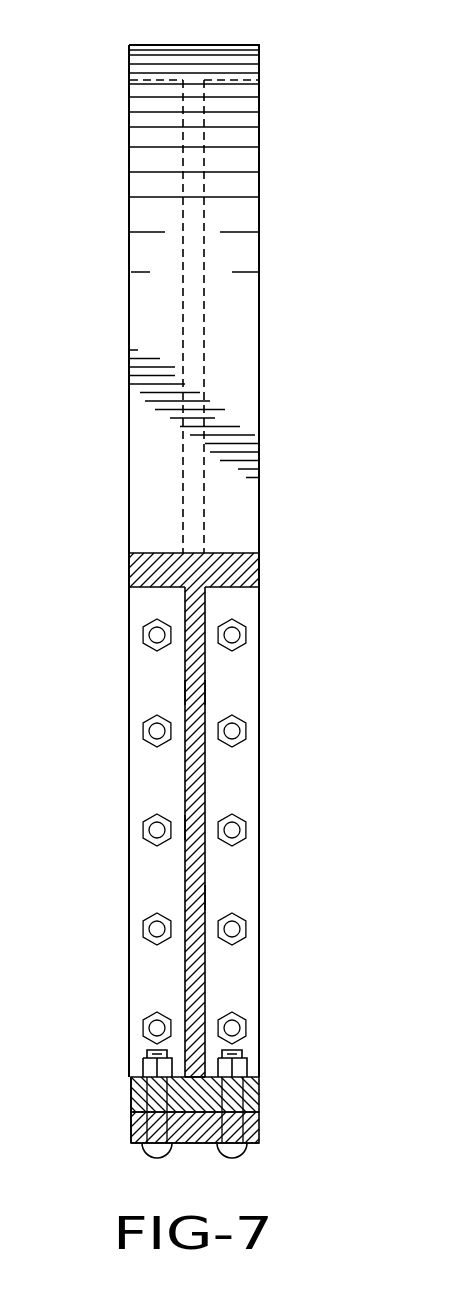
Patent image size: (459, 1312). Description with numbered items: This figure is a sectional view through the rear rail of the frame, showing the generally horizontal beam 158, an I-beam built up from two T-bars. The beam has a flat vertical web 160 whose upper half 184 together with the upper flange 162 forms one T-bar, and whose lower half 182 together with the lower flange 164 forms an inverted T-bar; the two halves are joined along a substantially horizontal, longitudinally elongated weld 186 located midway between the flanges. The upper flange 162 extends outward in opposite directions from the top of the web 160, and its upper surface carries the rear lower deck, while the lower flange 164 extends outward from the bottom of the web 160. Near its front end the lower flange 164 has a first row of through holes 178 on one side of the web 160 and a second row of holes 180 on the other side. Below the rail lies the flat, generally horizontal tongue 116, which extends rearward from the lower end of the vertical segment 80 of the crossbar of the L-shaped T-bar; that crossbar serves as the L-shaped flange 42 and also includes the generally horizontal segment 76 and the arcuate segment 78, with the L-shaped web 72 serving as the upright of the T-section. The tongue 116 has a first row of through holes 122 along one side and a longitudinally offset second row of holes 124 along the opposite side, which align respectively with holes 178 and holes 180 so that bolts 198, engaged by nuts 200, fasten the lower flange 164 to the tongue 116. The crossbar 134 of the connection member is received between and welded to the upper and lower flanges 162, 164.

The L-shaped flange 42 is at (262, 523).
The L-shaped web 72 is at (198, 351).
The generally horizontal segment 76 is at (231, 62).
The arcuate segment 78 is at (245, 163).
The generally vertical segment 80 is at (235, 401).
The tongue 116 is at (262, 1137).
The first row of through holes 122 is at (131, 1120).
The second row of through holes 124 is at (260, 1118).
The crossbar 134 is at (141, 890).
The generally horizontal beam 158 is at (206, 773).
The web 160 is at (186, 693).
The upper flange 162 is at (158, 562).
The lower flange 164 is at (200, 1100).
The first row of through holes 178 is at (131, 1092).
The second row of longitudinally spaced holes 180 is at (260, 1092).
The lower half of web 182 is at (202, 897).
The upper half of web 184 is at (202, 693).
The weld 186 is at (188, 828).
The bolts 198 is at (146, 635).
The nuts 200 is at (147, 647).